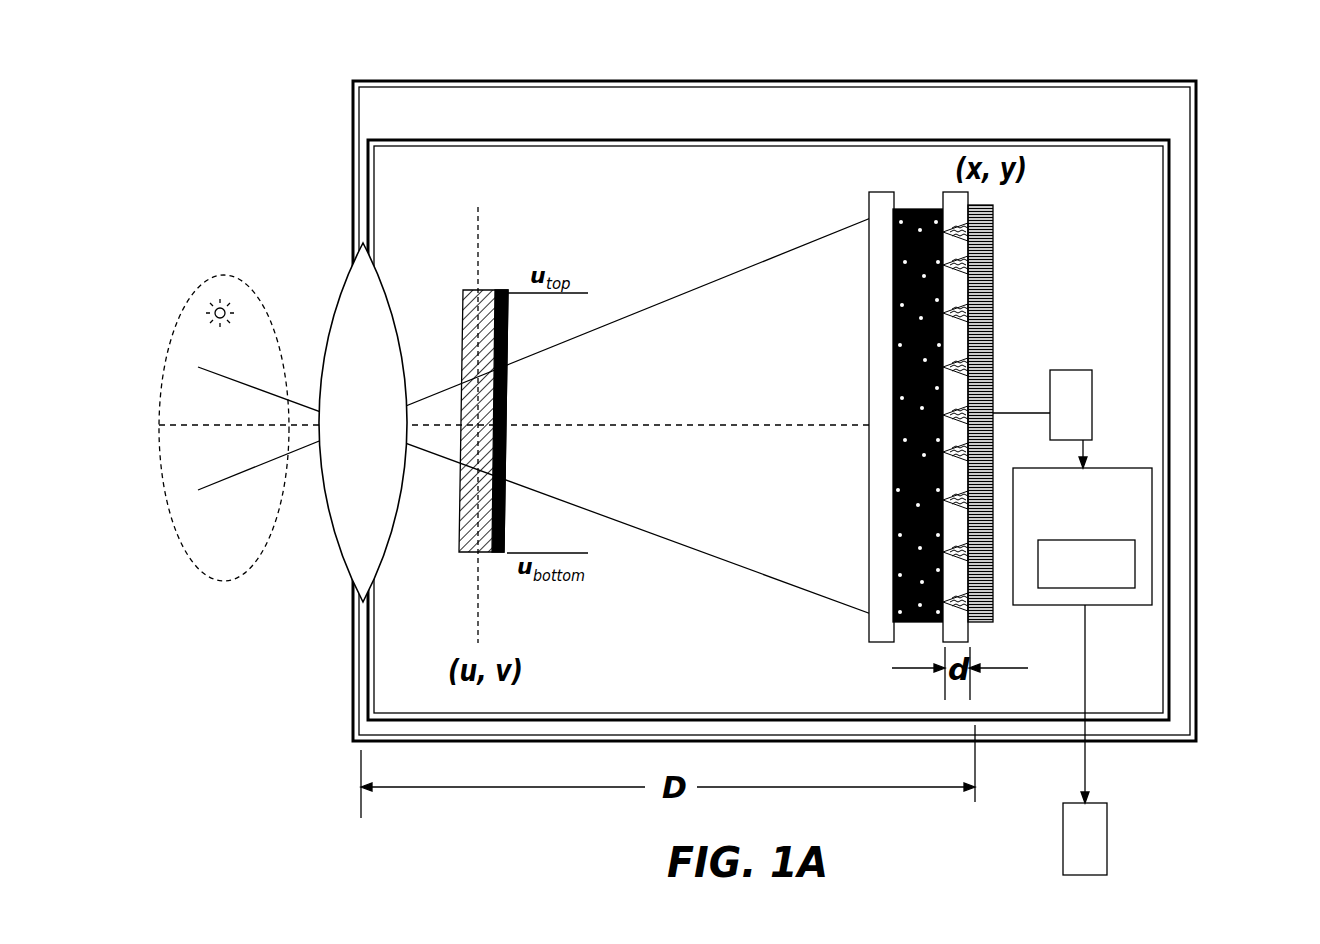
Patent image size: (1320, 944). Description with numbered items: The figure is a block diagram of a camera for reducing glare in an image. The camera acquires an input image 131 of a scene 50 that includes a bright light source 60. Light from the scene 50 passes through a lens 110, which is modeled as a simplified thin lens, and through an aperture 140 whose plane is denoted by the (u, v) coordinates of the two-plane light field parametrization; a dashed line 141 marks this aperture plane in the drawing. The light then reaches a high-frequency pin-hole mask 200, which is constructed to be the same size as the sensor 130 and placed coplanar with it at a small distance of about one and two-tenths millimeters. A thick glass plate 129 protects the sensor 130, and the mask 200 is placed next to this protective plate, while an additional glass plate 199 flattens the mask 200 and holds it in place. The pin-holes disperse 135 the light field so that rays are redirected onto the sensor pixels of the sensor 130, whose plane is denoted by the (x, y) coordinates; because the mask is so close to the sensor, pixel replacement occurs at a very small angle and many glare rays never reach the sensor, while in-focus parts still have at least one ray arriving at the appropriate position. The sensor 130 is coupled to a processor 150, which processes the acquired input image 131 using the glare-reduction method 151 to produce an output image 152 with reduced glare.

The scene 50 is at (257, 563).
The bright light source 60 is at (212, 302).
The lens 110 is at (345, 281).
The aperture 140 is at (490, 290).
The mask plane 141 is at (478, 210).
The additional glass plate 199 is at (887, 192).
The high-frequency mask 200 is at (916, 209).
The glass plate 129 is at (945, 192).
The sensor 130 is at (992, 236).
The dispersion of the lightfield 135 is at (968, 318).
The input image 131 is at (1063, 370).
The processor 150 is at (1128, 468).
The method 151 is at (1135, 570).
The output image 152 is at (1100, 803).